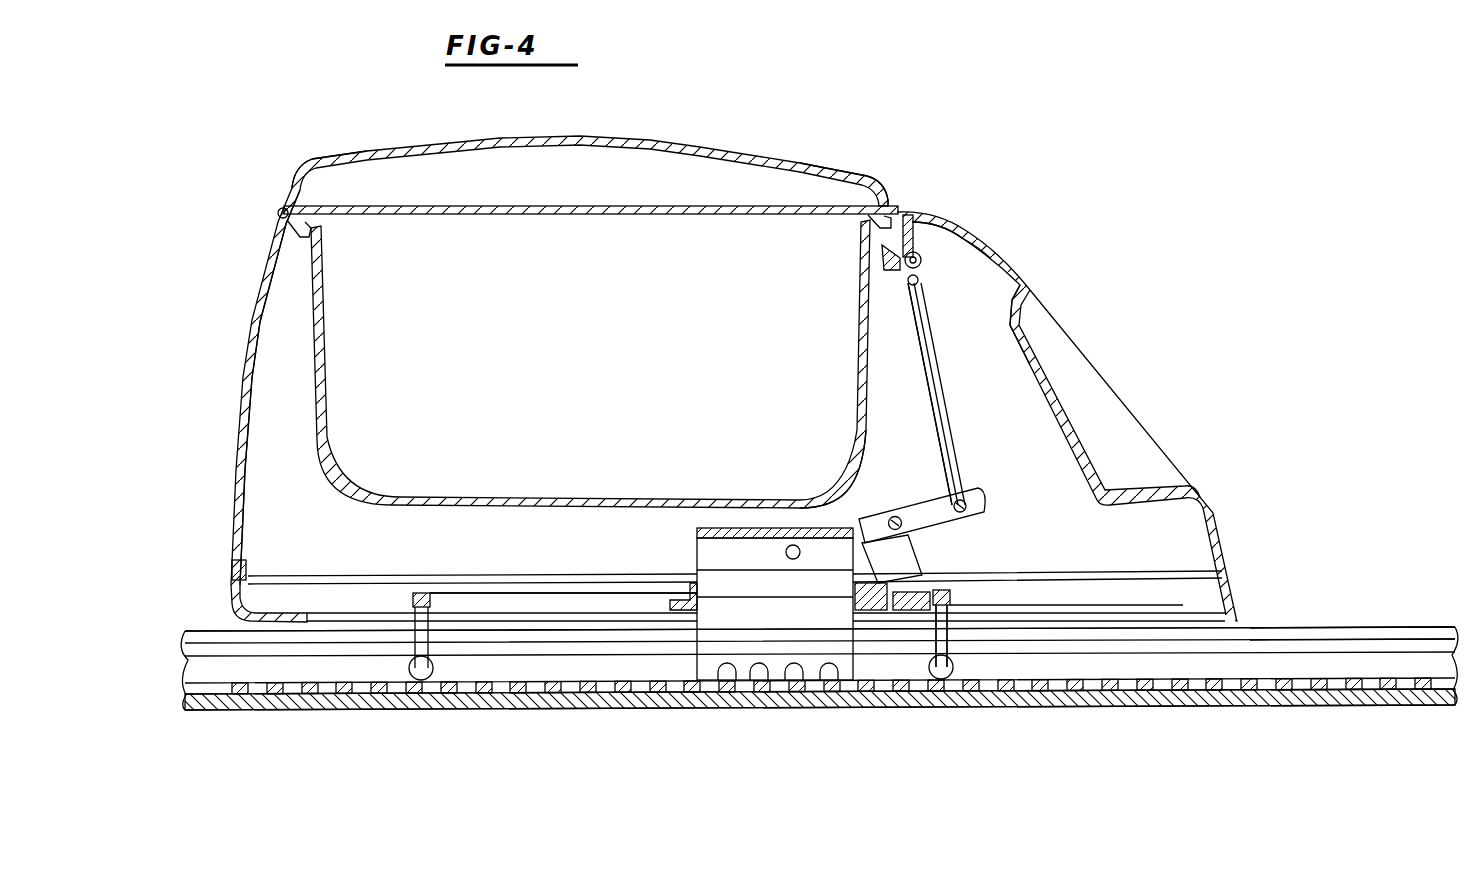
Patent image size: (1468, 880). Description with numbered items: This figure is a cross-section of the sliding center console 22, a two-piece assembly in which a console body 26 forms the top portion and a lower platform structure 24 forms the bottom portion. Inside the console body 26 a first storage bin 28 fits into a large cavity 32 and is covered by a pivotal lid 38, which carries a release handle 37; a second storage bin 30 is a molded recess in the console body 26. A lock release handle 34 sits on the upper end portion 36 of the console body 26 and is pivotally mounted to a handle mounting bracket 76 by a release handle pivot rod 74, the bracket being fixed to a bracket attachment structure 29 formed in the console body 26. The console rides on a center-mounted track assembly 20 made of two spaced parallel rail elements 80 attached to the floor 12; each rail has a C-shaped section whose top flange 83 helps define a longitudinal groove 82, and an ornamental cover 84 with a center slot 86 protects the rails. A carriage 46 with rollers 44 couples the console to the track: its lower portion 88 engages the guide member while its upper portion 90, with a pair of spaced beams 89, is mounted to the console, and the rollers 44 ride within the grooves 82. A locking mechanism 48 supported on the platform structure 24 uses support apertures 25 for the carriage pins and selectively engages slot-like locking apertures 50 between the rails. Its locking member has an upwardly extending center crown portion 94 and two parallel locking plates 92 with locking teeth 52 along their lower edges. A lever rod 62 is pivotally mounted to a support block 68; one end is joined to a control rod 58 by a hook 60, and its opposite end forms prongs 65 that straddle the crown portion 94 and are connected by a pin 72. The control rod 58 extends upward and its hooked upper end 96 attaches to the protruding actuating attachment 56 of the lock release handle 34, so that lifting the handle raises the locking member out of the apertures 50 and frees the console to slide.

The floor 12 is at (250, 710).
The track assembly 20 is at (1262, 596).
The sliding center console 22 is at (1067, 387).
The platform structure 24 is at (293, 580).
The support apertures 25 is at (402, 598).
The console body 26 is at (236, 470).
The first storage bin 28 is at (317, 442).
The bracket attachment structure 29 is at (897, 235).
The second storage bin 30 is at (1133, 412).
The cavity 32 is at (247, 382).
The lock release handle 34 is at (962, 240).
The upper end portion 36 is at (1028, 298).
The release handle 37 is at (885, 182).
The lid 38 is at (295, 168).
The rollers 44 is at (400, 678).
The carriage 46 is at (552, 594).
The locking mechanism 48 is at (1003, 492).
The locking apertures 50 is at (568, 688).
The locking teeth 52 is at (742, 680).
The protruding actuating attachment 56 is at (930, 270).
The control rod 58 is at (963, 457).
The hook 60 is at (950, 495).
The lever rod 62 is at (987, 513).
The prongs 65 is at (835, 518).
The support block 68 is at (920, 578).
The pin 72 is at (787, 560).
The release handle pivot rod 74 is at (915, 252).
The handle mounting bracket 76 is at (897, 267).
The rail elements 80 is at (360, 628).
The longitudinal grooves 82 is at (1093, 672).
The top flange 83 is at (320, 650).
The ornamental cover 84 is at (680, 583).
The center slot 86 is at (1365, 628).
The lower portion 88 is at (945, 640).
The beams 89 is at (612, 598).
The upper portion 90 is at (463, 597).
The locking plates 92 is at (707, 653).
The center crown portion 94 is at (723, 528).
The hooked upper end 96 is at (920, 318).